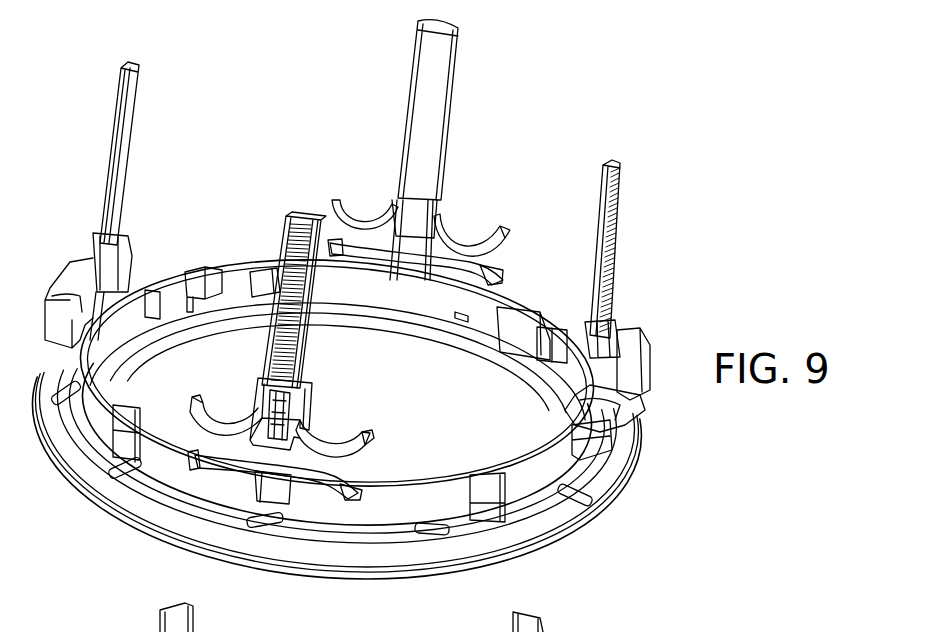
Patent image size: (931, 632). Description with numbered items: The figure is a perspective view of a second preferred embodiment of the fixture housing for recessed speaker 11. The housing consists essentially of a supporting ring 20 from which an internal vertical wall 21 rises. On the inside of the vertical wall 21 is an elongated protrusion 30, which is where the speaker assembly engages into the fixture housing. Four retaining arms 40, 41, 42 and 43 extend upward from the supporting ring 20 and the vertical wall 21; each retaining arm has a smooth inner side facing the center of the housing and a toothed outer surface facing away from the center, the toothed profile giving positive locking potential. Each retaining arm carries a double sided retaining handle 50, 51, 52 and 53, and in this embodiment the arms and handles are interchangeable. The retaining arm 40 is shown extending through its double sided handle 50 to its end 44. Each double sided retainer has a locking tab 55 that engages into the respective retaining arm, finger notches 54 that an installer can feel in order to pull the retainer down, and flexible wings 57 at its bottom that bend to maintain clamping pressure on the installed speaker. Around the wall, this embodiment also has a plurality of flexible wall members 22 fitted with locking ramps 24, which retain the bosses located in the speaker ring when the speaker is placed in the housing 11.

The fixture housing for recessed speaker 11 is at (743, 218).
The supporting ring 20 is at (640, 483).
The vertical wall 21 is at (158, 477).
The flexible wall member 22 is at (505, 497).
The locking ramp 24 is at (205, 272).
The elongated protrusion 30 is at (460, 317).
The retaining arm 40 is at (577, 427).
The retaining arm 41 is at (412, 78).
The retaining arm 42 is at (112, 143).
The retaining arm 43 is at (312, 337).
The end of retaining arm 44 is at (620, 182).
The double sided retaining handle 50 is at (567, 405).
The double sided retaining handle 51 is at (395, 198).
The double sided retaining handle 52 is at (90, 242).
The double sided retaining handle 53 is at (372, 443).
The finger notches 54 is at (340, 447).
The locking tab 55 is at (274, 446).
The flexible wings 57 is at (342, 497).